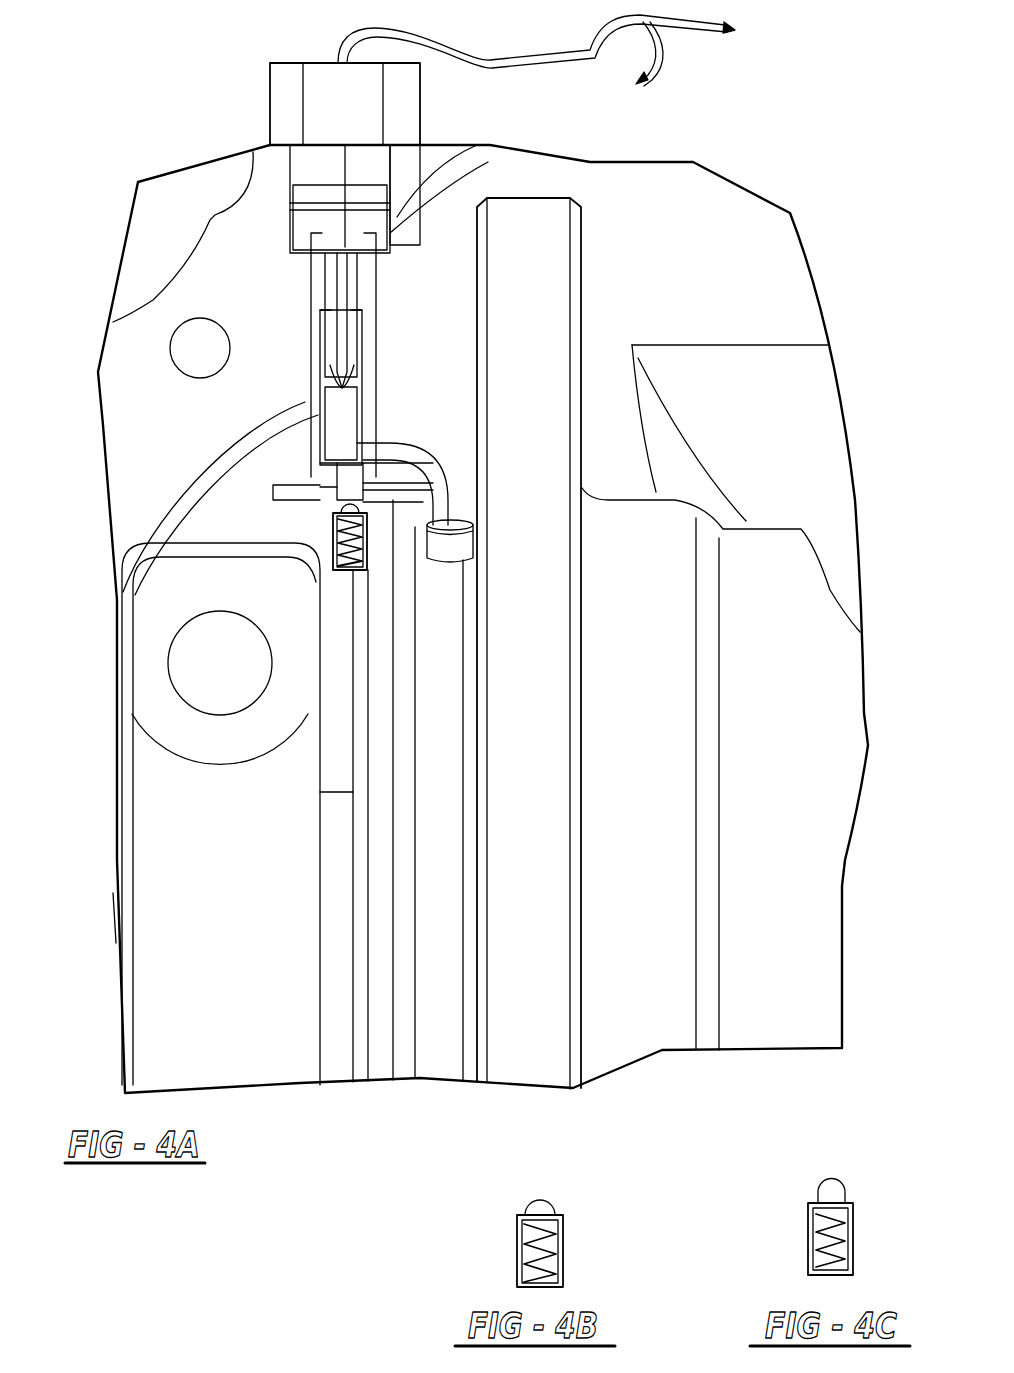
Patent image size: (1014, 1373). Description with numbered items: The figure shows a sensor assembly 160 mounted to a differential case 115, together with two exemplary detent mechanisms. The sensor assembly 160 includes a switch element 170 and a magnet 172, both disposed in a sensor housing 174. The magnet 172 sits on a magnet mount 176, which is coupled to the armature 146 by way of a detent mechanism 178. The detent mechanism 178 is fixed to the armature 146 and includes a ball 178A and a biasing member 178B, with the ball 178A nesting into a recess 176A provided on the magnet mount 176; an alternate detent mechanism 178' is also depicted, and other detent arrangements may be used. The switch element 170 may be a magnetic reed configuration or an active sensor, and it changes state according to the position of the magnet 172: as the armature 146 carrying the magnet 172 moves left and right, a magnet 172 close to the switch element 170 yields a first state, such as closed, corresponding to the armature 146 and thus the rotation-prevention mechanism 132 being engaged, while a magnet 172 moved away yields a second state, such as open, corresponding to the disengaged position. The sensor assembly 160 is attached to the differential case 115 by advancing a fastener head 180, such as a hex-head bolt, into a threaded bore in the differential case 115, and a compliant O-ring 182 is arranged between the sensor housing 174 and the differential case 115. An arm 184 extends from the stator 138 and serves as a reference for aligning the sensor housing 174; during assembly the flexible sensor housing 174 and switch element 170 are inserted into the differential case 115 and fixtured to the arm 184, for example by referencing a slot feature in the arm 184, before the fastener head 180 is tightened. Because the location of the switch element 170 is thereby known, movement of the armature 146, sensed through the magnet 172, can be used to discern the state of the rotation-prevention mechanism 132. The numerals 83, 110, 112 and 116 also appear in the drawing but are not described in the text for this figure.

In FIG. 4A, the wire harness 83 is at (290, 167).
In FIG. 4A, the fastener head 180 is at (283, 93).
In FIG. 4A, the O-ring 182 is at (423, 147).
In FIG. 4A, the housing body 110 is at (800, 192).
In FIG. 4A, the sensor assembly 160 is at (287, 235).
In FIG. 4A, the differential case 115 is at (153, 322).
In FIG. 4A, the switch element 170 is at (345, 403).
In FIG. 4A, the sensor housing 174 is at (320, 423).
In FIG. 4A, the magnet 172 is at (325, 455).
In FIG. 4A, the arm 184 is at (273, 493).
In FIG. 4A, the magnet mount 176 is at (333, 497).
In FIG. 4A, the recess 176A is at (383, 477).
In FIG. 4A, the detent mechanism 178 is at (203, 562).
In FIG. 4B, the detent mechanism 178 is at (597, 1207).
In FIG. 4B, the ball 178A is at (535, 1203).
In FIG. 4B, the biasing member 178B is at (523, 1272).
In FIG. 4C, the alternate detent mechanism 178' is at (856, 1189).
In FIG. 4A, the armature 146 is at (377, 597).
In FIG. 4A, the rotation-prevention mechanism 132 is at (623, 581).
In FIG. 4A, the housing side wall 112 is at (809, 719).
In FIG. 4A, the stator 138 is at (405, 1060).
In FIG. 4A, the rib 116 is at (527, 1034).